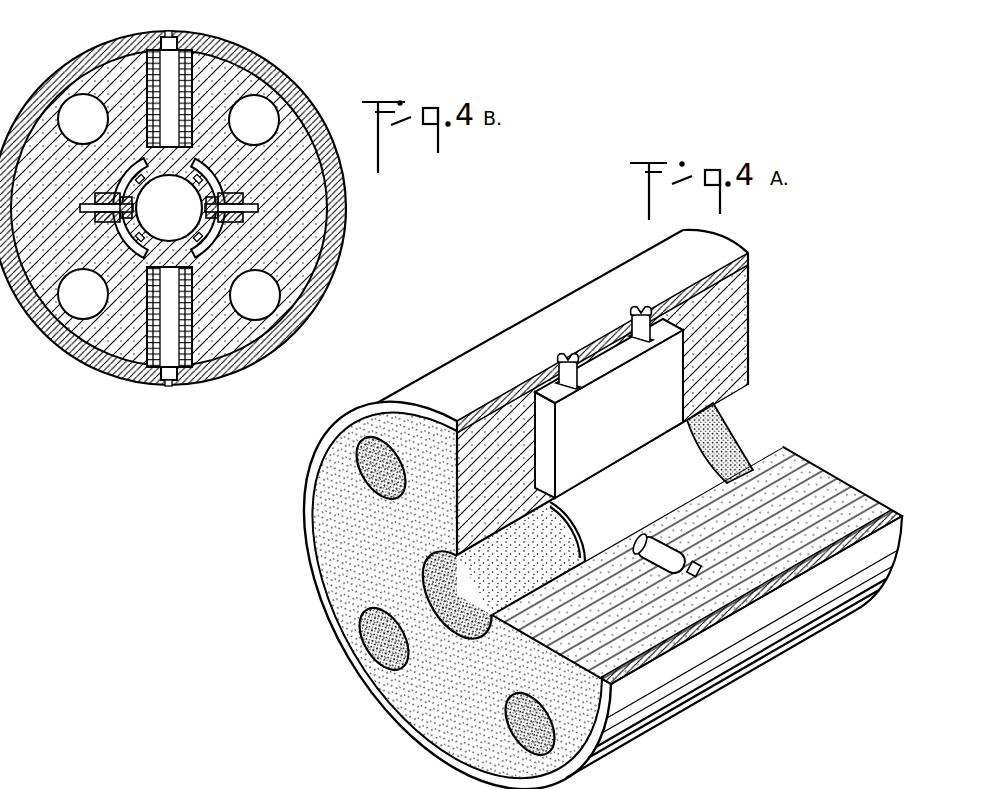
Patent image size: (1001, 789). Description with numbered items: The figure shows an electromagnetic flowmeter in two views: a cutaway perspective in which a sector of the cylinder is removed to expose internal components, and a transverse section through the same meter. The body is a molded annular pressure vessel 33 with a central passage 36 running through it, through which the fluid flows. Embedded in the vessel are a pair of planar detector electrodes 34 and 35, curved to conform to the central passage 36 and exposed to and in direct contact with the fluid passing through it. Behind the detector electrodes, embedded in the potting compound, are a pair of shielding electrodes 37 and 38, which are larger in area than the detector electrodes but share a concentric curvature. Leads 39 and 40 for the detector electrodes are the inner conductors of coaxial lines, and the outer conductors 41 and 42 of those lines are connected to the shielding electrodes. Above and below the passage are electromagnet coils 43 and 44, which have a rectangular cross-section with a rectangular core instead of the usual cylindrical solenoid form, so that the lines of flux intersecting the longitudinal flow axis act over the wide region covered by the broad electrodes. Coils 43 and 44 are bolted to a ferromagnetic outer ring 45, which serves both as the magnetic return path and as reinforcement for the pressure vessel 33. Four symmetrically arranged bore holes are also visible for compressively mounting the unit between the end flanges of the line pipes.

In FIG. 4B, the molded annular pressure vessel 33 is at (315, 226).
In FIG. 4A, the molded annular pressure vessel 33 is at (822, 478).
In FIG. 4B, the detector electrode 34 is at (196, 184).
In FIG. 4A, the detector electrode 34 is at (566, 546).
In FIG. 4B, the detector electrode 35 is at (197, 216).
In FIG. 4A, the detector electrode 35 is at (518, 573).
In FIG. 4B, the central passage 36 is at (222, 240).
In FIG. 4A, the central passage 36 is at (462, 636).
In FIG. 4B, the shielding electrode 37 is at (207, 173).
In FIG. 4A, the shielding electrode 37 is at (690, 445).
In FIG. 4B, the shielding electrode 38 is at (140, 257).
In FIG. 4B, the lead 39 is at (250, 199).
In FIG. 4A, the lead 39 is at (697, 562).
In FIG. 4B, the lead 40 is at (84, 212).
In FIG. 4B, the outer conductor 41 is at (254, 226).
In FIG. 4A, the outer conductor 41 is at (663, 558).
In FIG. 4B, the outer conductor 42 is at (95, 226).
In FIG. 4B, the electromagnet coil 43 is at (190, 72).
In FIG. 4A, the electromagnet coil 43 is at (637, 419).
In FIG. 4B, the electromagnet coil 44 is at (185, 347).
In FIG. 4B, the ferromagnetic outer ring 45 is at (302, 90).
In FIG. 4A, the ferromagnetic outer ring 45 is at (750, 660).